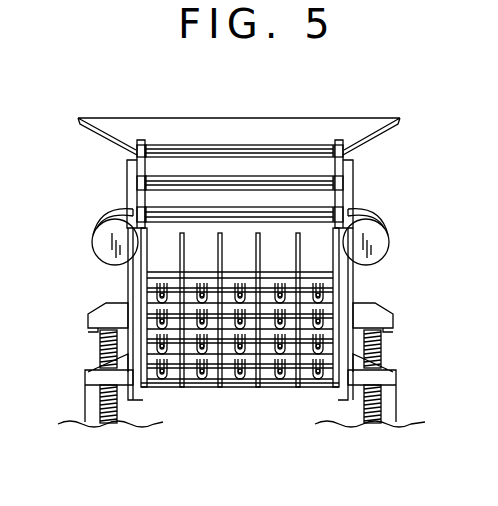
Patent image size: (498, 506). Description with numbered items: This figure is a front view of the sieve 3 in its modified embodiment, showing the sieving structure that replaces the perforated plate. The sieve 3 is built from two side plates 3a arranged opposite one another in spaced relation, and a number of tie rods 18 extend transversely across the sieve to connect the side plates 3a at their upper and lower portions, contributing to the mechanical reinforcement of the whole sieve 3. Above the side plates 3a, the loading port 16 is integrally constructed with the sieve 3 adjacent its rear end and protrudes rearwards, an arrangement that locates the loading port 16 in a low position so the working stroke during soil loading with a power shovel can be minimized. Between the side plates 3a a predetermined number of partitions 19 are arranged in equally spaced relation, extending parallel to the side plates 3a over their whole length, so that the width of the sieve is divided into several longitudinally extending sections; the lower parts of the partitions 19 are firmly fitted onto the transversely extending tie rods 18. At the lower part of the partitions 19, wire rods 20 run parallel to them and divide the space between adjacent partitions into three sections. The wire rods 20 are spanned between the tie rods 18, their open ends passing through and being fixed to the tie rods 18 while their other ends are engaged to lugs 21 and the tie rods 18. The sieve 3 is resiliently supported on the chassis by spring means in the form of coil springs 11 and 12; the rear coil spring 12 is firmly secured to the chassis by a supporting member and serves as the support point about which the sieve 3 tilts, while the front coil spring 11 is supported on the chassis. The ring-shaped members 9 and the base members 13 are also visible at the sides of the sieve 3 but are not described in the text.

The sieve 3 is at (124, 179).
The side plates 3a is at (147, 285).
The ring roller 9 is at (93, 240).
The front coil spring 11 is at (100, 406).
The rear coil spring 12 is at (100, 346).
The base plate 13 is at (85, 393).
The loading port 16 is at (305, 118).
The tie rods 18 is at (243, 150).
The partitions 19 is at (182, 388).
The wire rods 20 is at (242, 283).
The lugs 21 is at (163, 282).